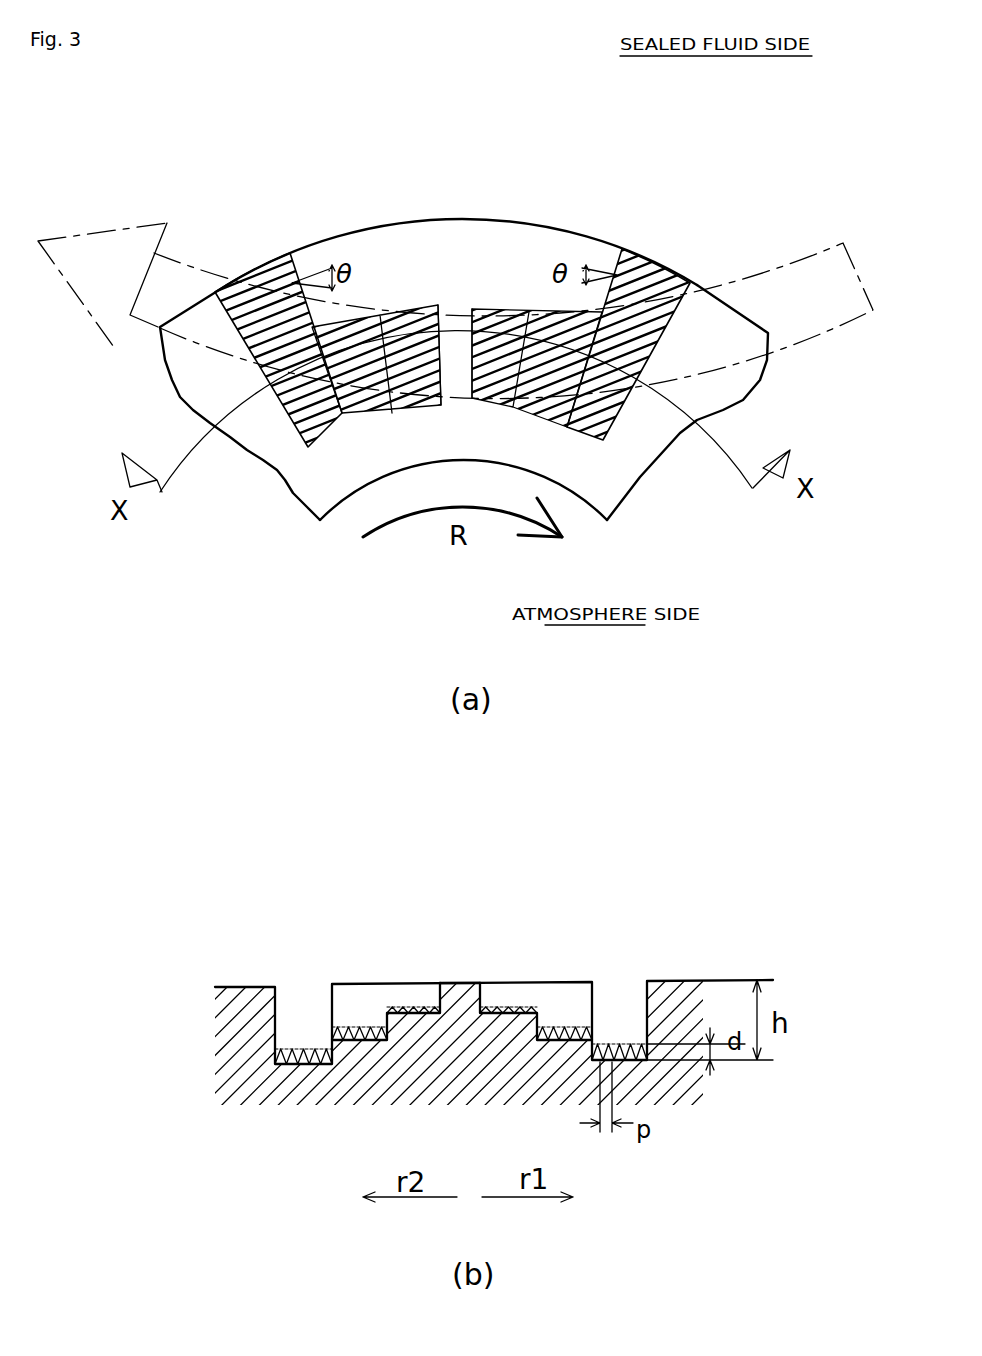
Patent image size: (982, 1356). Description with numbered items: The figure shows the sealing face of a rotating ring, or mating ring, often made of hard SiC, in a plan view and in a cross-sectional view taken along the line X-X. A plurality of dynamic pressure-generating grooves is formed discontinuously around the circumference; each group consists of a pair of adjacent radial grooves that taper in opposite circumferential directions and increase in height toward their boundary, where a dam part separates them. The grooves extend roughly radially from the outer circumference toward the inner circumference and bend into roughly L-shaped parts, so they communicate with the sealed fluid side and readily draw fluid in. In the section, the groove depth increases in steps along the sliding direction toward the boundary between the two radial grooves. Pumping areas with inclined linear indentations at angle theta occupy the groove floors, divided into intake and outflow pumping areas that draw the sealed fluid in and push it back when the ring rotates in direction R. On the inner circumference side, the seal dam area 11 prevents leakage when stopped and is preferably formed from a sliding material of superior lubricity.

The seal dam area 11 is at (512, 440).